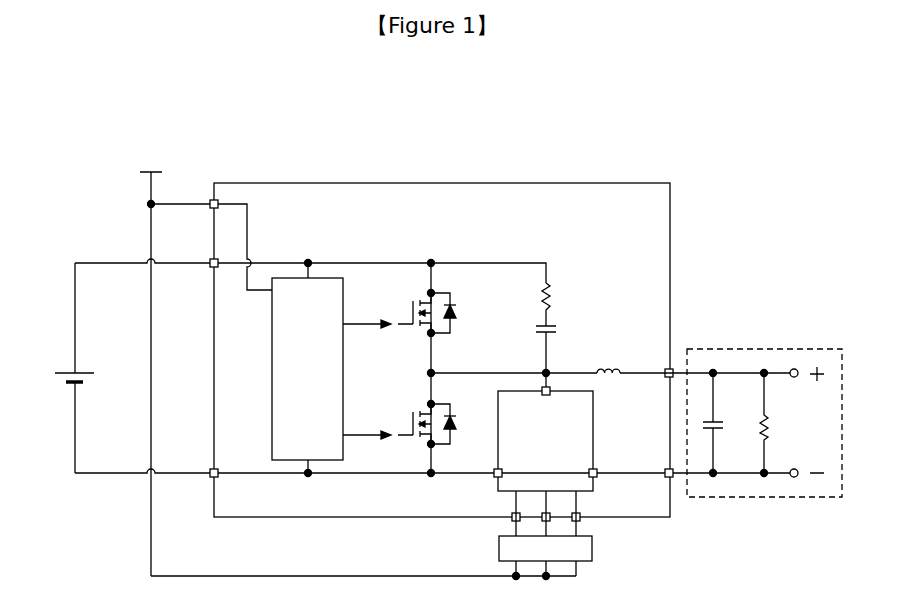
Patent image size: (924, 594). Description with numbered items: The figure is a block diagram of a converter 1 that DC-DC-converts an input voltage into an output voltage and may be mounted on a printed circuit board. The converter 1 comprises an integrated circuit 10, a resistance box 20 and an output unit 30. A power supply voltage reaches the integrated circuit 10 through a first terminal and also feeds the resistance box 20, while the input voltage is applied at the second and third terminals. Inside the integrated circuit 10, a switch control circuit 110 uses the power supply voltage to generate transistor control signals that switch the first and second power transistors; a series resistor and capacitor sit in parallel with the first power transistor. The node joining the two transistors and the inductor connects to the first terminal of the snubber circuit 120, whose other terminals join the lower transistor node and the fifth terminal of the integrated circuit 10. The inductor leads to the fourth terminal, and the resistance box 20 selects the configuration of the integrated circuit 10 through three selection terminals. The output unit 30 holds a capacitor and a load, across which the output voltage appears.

The converter 1 is at (125, 133).
The integrated circuit 10 is at (274, 183).
The switch control circuit 110 is at (272, 331).
The snubber circuit 120 is at (593, 412).
The resistance box 20 is at (499, 549).
The output unit 30 is at (829, 348).